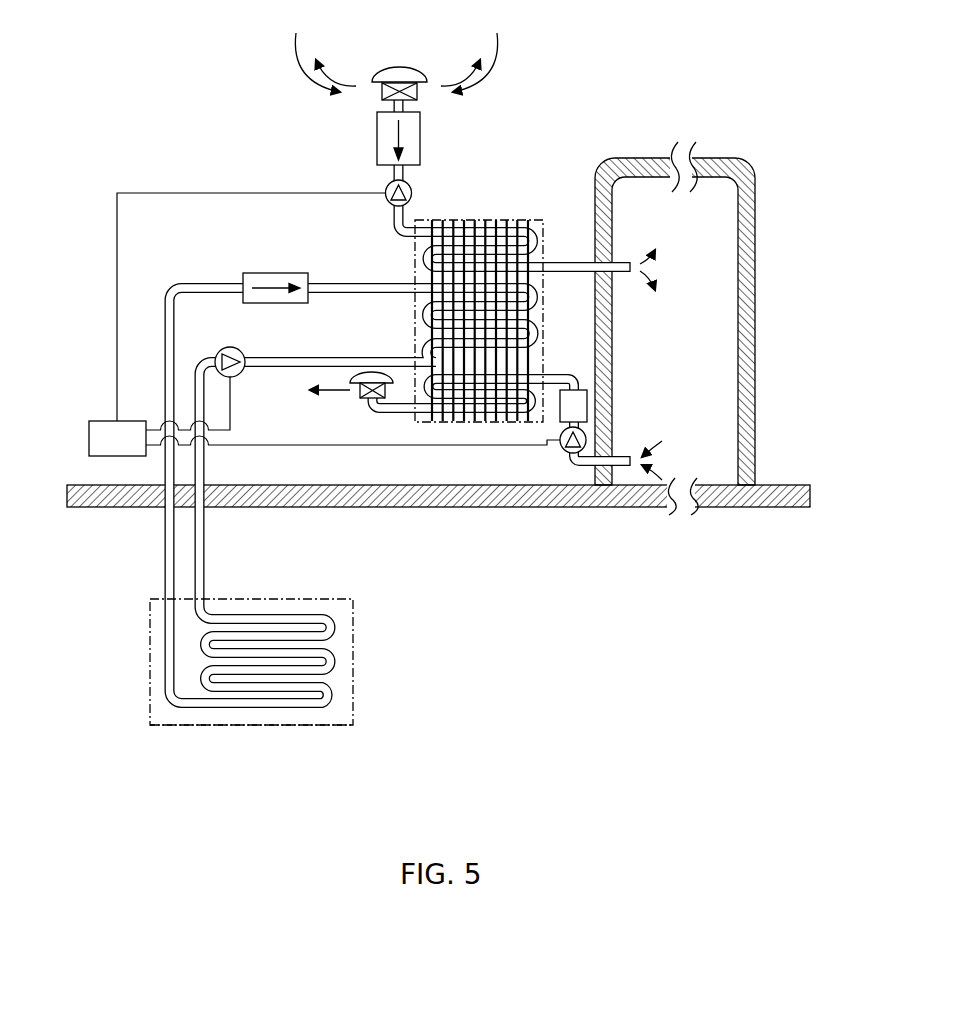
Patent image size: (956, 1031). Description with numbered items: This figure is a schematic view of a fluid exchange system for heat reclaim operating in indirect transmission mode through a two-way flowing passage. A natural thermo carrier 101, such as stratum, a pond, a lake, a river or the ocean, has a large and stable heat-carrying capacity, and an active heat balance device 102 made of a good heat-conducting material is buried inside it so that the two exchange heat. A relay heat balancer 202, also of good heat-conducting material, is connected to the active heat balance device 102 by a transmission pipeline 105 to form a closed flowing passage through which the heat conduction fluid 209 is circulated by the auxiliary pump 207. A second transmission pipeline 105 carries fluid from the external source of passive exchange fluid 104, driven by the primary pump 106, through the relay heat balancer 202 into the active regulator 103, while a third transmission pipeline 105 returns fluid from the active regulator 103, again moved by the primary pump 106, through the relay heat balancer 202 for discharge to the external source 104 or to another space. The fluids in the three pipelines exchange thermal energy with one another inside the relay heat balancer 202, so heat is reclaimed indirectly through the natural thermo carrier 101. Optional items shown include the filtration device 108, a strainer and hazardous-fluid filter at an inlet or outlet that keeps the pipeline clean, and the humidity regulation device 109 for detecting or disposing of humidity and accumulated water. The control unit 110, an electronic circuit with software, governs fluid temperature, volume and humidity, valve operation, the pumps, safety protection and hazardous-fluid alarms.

The natural thermo carrier 101 is at (428, 510).
The active heat balance device 102 is at (248, 727).
The active regulator 103 is at (710, 278).
The external source of passive exchange fluid 104 is at (318, 415).
The transmission pipeline 105 is at (203, 281).
The primary pump 106 is at (411, 187).
The filtration device 108 is at (403, 66).
The humidity regulation device 109 is at (377, 152).
The control unit 110 is at (104, 420).
The relay heat balancer 202 is at (488, 220).
The auxiliary pump 207 is at (238, 346).
The heat conduction fluid 209 is at (161, 650).